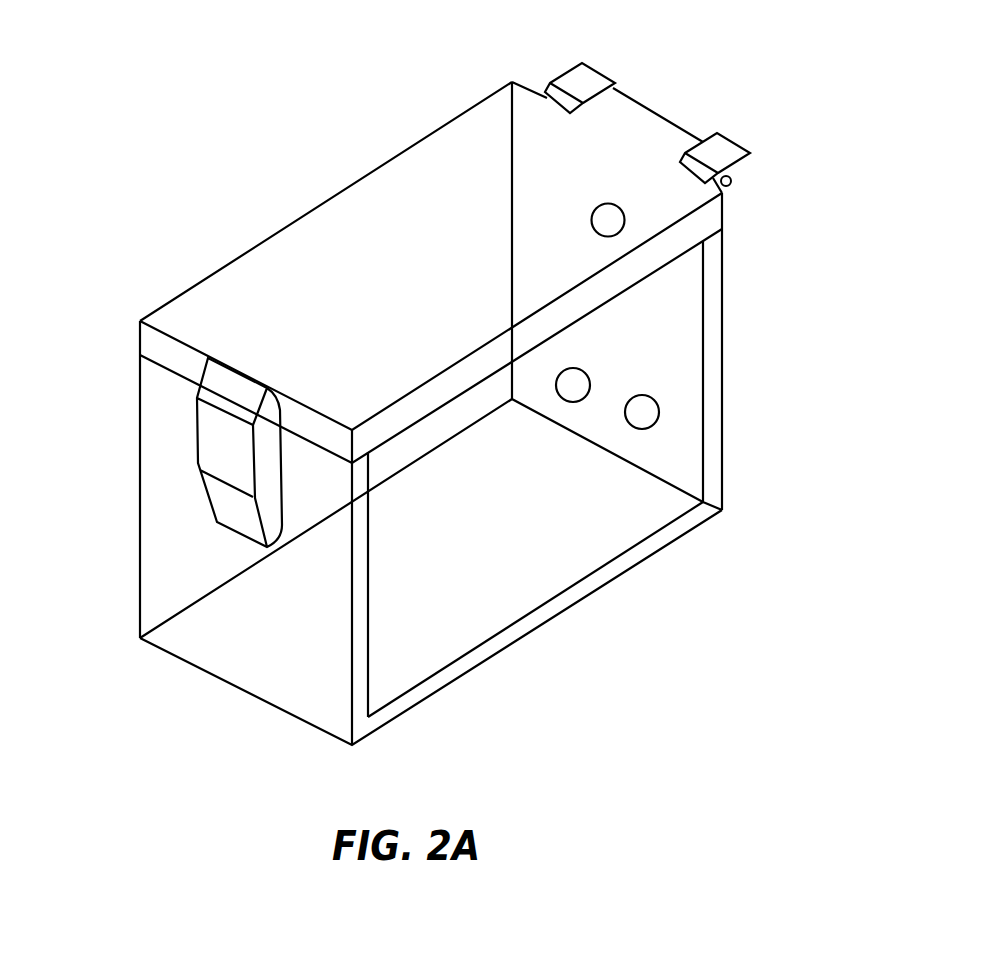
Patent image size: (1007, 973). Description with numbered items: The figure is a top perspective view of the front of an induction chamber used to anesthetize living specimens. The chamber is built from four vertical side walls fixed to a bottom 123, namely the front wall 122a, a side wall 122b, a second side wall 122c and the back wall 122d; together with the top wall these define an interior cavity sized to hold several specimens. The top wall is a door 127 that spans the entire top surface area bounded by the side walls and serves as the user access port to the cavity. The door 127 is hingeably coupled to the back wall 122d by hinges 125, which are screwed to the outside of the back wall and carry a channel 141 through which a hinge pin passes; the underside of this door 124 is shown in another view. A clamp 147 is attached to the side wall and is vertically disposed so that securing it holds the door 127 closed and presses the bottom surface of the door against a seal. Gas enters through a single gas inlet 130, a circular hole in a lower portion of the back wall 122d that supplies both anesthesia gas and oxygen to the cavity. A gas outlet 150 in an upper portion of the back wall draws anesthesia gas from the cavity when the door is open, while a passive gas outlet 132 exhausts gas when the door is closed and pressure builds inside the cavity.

The front wall 122a is at (282, 656).
The side wall 122b is at (627, 502).
The side wall 122c is at (160, 402).
The back wall 122d is at (678, 300).
The bottom 123 is at (533, 565).
The door 124 is at (680, 198).
The hinges 125 is at (583, 77).
The door 127 is at (240, 298).
The gas inlet 130 is at (650, 413).
The passive gas outlet 132 is at (580, 380).
The channel 141 is at (733, 180).
The clamp 147 is at (218, 447).
The gas outlet 150 is at (602, 215).